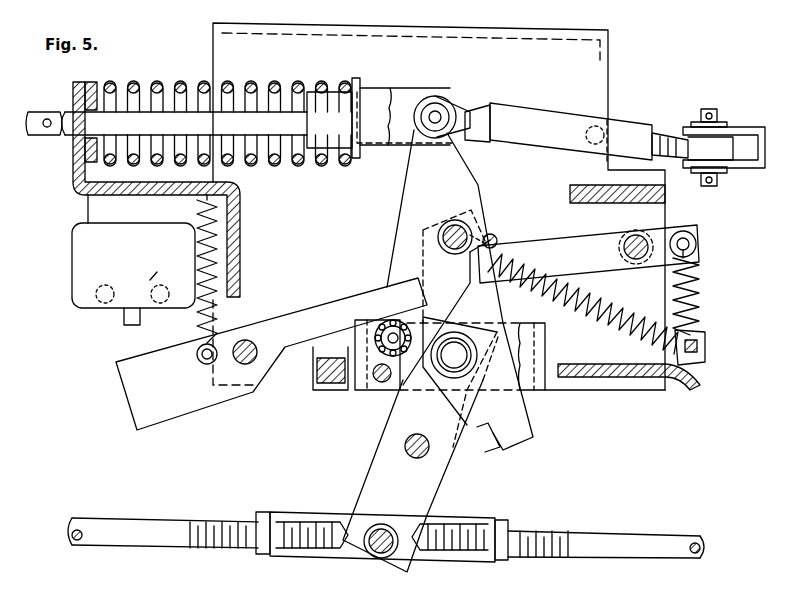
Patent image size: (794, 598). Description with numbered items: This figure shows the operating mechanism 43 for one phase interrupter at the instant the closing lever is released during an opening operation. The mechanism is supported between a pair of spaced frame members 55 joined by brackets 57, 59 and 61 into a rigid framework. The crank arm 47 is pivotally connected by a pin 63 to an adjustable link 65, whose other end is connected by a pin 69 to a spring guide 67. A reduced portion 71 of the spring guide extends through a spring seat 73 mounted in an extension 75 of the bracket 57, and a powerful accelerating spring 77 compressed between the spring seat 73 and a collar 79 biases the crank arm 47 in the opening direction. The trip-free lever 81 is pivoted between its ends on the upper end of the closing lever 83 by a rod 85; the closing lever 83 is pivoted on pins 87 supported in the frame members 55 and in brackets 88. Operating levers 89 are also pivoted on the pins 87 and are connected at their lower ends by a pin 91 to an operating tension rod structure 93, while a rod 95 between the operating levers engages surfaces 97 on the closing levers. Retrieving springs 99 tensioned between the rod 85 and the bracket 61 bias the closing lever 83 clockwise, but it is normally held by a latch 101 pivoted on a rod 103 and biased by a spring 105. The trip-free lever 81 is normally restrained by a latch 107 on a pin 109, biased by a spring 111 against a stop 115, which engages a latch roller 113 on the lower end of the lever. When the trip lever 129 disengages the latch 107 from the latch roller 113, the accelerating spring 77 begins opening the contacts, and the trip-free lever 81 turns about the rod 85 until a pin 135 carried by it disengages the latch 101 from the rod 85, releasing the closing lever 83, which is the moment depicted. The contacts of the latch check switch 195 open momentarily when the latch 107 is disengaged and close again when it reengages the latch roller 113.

The operating mechanism 43 is at (363, 227).
The crank arm 47 is at (752, 125).
The frame members 55 is at (606, 48).
The bracket 57 is at (239, 213).
The bracket 59 is at (594, 186).
The bracket 61 is at (678, 402).
The pin 63 is at (708, 109).
The adjustable link 65 is at (612, 120).
The spring guide 67 is at (377, 90).
The pin 69 is at (440, 112).
The reduced portion 71 is at (300, 117).
The spring seat 73 is at (74, 147).
The extension 75 is at (72, 162).
The accelerating spring 77 is at (250, 80).
The collar 79 is at (356, 78).
The trip-free lever 81 is at (403, 156).
The closing lever 83 is at (536, 433).
The rod 85 is at (446, 224).
The pins 87 is at (460, 330).
The brackets 88 is at (543, 338).
The operating levers 89 is at (398, 422).
The pin 91 is at (384, 518).
The operating tension rod structure 93 is at (542, 509).
The rod 95 is at (420, 438).
The surfaces 97 is at (488, 438).
The retrieving springs 99 is at (630, 312).
The latch 101 is at (558, 242).
The rod 103 is at (636, 234).
The spring 105 is at (702, 300).
The latch 107 is at (318, 310).
The pin 109 is at (256, 348).
The spring 111 is at (200, 260).
The latch roller 113 is at (405, 318).
The stop 115 is at (380, 388).
The trip lever 129 is at (316, 382).
The pin 135 is at (497, 241).
The latch check switch 195 is at (44, 256).